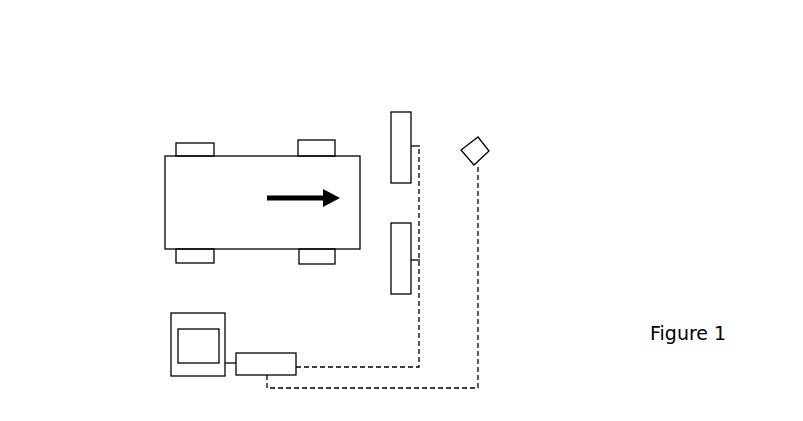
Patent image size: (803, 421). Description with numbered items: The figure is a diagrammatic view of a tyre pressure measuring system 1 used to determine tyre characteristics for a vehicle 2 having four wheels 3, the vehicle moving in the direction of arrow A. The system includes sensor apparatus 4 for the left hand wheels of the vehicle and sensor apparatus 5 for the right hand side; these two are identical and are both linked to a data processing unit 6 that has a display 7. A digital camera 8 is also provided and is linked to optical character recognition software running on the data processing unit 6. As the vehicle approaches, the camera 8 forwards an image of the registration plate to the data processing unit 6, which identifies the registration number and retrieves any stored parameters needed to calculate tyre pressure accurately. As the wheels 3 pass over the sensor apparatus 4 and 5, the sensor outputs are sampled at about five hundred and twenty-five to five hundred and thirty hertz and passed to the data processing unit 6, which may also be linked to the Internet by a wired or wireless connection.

The system 1 is at (114, 57).
The vehicle 2 is at (250, 165).
The wheels 3 is at (191, 150).
The sensor apparatus 4 is at (398, 127).
The sensor apparatus 5 is at (398, 251).
The data processing unit 6 is at (256, 353).
The display 7 is at (178, 355).
The digital camera 8 is at (486, 142).